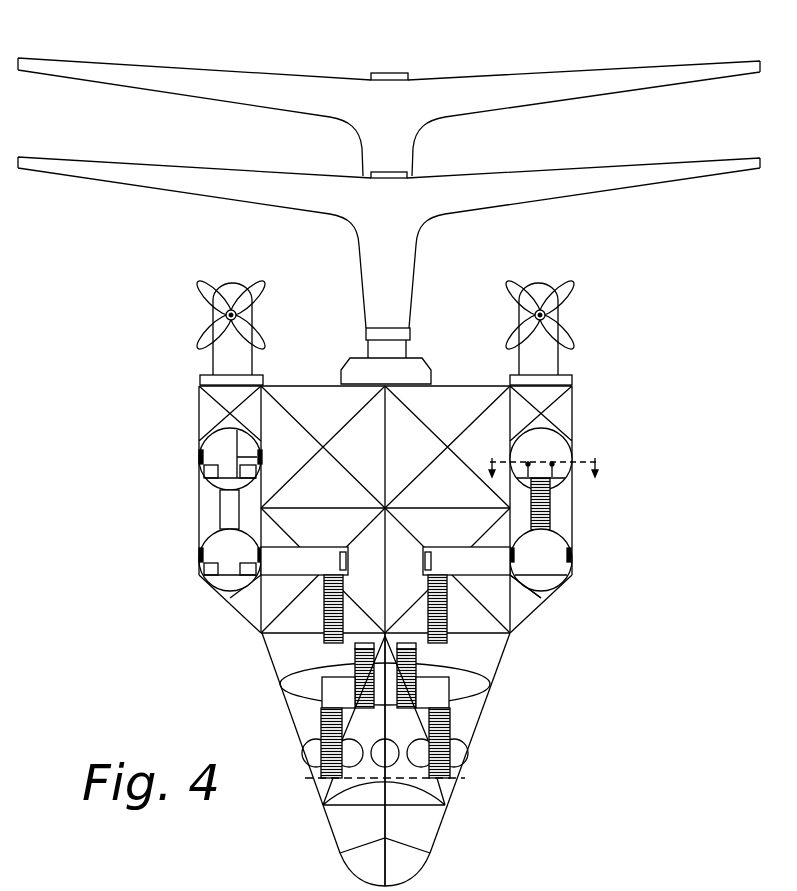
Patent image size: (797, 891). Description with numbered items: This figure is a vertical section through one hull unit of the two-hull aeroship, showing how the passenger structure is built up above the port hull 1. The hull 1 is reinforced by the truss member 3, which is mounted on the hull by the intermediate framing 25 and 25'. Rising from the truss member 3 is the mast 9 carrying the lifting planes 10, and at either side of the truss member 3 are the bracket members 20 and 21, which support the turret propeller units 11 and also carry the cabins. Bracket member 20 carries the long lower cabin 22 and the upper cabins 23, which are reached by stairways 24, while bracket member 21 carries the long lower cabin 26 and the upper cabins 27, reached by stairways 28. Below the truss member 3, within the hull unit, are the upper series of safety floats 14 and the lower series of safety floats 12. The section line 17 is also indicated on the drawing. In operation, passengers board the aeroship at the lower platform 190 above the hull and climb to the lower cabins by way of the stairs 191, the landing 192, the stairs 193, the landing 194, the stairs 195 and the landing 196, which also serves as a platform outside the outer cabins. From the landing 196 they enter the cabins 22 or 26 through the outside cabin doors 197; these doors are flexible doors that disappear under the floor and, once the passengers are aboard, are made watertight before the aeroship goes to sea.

The port hull 1 is at (332, 836).
The truss member 3 is at (302, 384).
The mast 9 is at (400, 73).
The lifting plane 10 is at (477, 77).
The propeller unit 11 is at (196, 281).
The lower series of safety floats 12 is at (303, 748).
The upper series of safety floats 14 is at (292, 690).
The section line 17 is at (543, 462).
The bracket member 20 is at (572, 405).
The bracket member 21 is at (199, 408).
The long lower cabin 22 is at (557, 547).
The upper cabin 23 is at (555, 447).
The stairway 24 is at (548, 512).
The intermediate framing 25 is at (511, 743).
The intermediate framing 25' is at (265, 743).
The long lower cabin 26 is at (215, 545).
The upper cabin 27 is at (215, 442).
The stairway 28 is at (220, 507).
The lower platform 190 is at (452, 777).
The stairs 191 is at (450, 733).
The landing 192 is at (449, 707).
The stairs 193 is at (418, 655).
The landing 194 is at (447, 645).
The stairs 195 is at (447, 620).
The landing 196 is at (530, 592).
The outside cabin door 197 is at (264, 557).